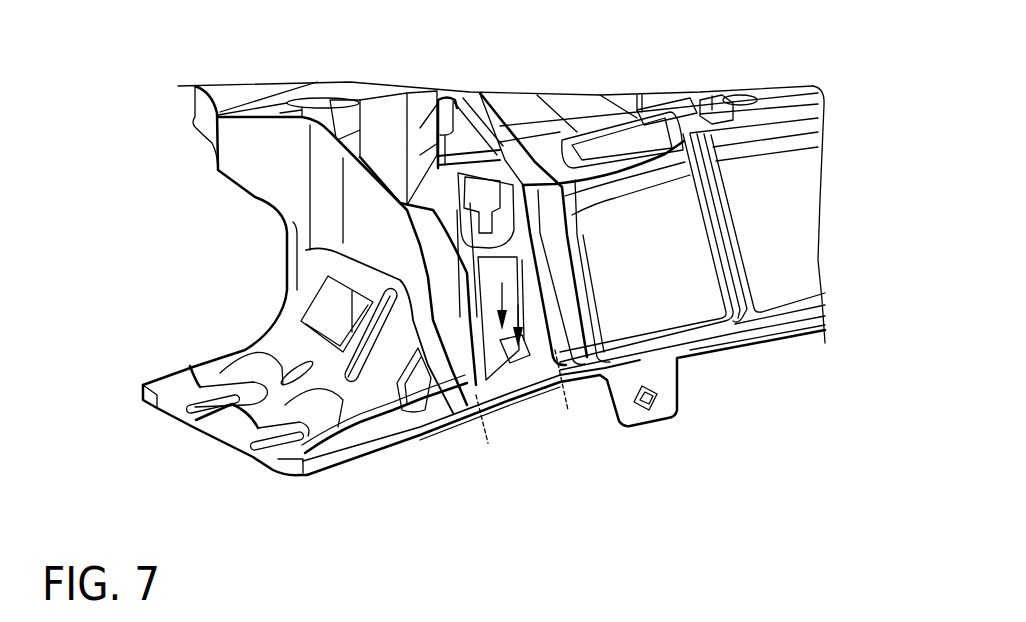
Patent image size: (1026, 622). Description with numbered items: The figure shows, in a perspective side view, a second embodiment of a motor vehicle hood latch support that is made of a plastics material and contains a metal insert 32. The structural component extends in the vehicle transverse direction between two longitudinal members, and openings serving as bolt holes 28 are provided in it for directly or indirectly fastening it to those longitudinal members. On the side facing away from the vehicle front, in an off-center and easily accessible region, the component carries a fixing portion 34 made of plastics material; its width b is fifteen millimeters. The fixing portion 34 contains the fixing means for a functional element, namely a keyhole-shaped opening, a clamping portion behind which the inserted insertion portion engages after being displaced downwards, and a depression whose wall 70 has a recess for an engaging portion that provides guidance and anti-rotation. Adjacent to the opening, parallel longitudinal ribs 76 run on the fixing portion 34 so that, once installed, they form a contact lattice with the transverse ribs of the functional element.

The bolt holes 28 is at (192, 386).
The metal insert 32 is at (762, 177).
The fixing portion 34 is at (505, 477).
The wall 70 is at (520, 357).
The longitudinal ribs 76 is at (462, 298).
The width of the fixing portion b is at (565, 395).